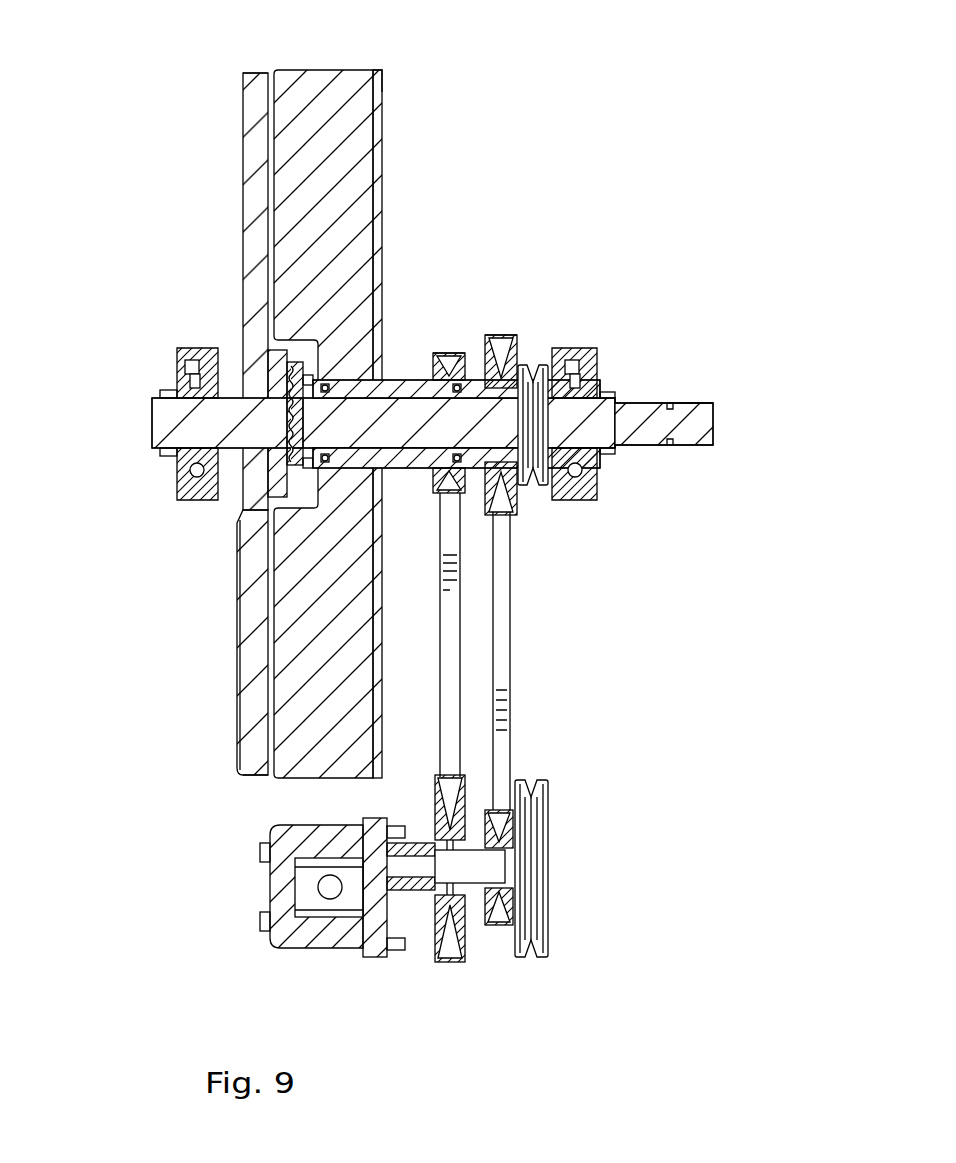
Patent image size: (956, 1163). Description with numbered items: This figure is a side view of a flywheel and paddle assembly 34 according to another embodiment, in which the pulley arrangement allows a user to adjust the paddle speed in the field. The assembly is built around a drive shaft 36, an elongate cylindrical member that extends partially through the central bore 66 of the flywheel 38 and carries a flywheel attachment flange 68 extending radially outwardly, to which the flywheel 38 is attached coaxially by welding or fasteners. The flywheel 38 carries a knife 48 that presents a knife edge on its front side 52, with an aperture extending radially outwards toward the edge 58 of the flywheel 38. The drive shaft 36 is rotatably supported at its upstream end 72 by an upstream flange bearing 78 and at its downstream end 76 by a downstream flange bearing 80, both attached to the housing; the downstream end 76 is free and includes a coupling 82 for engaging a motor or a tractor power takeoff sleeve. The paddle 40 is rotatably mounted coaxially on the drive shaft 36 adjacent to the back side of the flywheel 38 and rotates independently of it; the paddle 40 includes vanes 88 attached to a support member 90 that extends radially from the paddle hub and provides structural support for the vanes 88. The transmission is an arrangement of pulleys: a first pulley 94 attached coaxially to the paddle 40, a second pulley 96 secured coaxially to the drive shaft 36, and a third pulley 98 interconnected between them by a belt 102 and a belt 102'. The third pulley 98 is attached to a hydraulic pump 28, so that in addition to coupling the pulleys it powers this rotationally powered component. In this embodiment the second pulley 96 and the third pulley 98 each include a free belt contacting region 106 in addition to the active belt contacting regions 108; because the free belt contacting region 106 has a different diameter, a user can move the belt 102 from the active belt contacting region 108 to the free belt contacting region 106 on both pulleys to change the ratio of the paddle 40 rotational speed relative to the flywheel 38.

The hydraulic pump 28 is at (270, 887).
The flywheel and paddle assembly 34 is at (620, 214).
The drive shaft 36 is at (638, 447).
The flywheel 38 is at (248, 73).
The paddle 40 is at (383, 92).
The knife 48 is at (237, 657).
The front side 52 is at (248, 118).
The edge 58 is at (257, 782).
The central bore 66 is at (270, 492).
The flywheel attachment flange 68 is at (275, 375).
The upstream end 72 is at (152, 430).
The downstream end 76 is at (715, 425).
The upstream flange bearing 78 is at (185, 355).
The downstream flange bearing 80 is at (590, 500).
The coupling 82 is at (680, 403).
The vane 88 is at (345, 198).
The support member 90 is at (383, 131).
The first pulley 94 is at (436, 356).
The second pulley 96 is at (515, 345).
The third pulley 98 is at (549, 880).
The belt 102 is at (549, 661).
The belt 102' is at (422, 635).
The free belt contacting region 106 is at (540, 495).
The active belt contacting region 108 is at (498, 336).